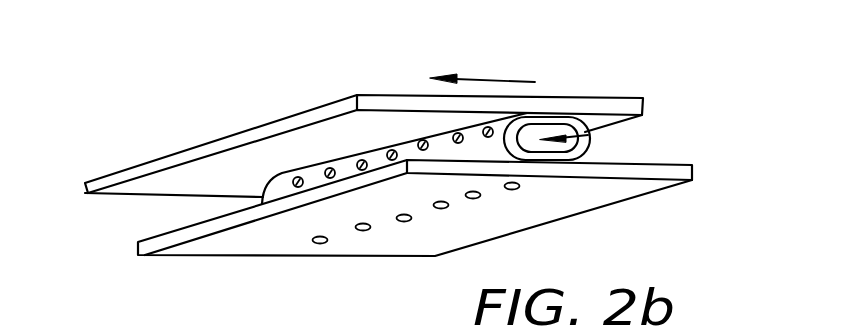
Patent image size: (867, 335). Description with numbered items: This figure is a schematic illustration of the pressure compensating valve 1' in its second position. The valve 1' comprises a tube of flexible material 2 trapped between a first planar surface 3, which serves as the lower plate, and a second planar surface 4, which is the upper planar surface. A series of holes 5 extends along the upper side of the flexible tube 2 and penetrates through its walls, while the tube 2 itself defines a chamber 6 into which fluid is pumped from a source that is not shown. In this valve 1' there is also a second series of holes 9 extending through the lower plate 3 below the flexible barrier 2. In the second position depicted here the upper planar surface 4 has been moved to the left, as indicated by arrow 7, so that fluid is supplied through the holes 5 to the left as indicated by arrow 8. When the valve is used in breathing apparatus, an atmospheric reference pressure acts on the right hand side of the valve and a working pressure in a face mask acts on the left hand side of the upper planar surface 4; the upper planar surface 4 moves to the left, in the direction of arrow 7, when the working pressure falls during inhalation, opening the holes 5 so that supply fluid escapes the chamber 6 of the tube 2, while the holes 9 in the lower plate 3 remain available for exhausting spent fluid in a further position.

The pressure compensating valve 1' is at (638, 37).
The tube of flexible material 2 is at (480, 140).
The first planar surface 3 is at (420, 238).
The second planar surface 4 is at (140, 167).
The series of holes 5 is at (393, 150).
The chamber 6 is at (590, 133).
The arrow 7 is at (497, 101).
The arrow 8 is at (330, 176).
The second series of holes 9 is at (519, 188).